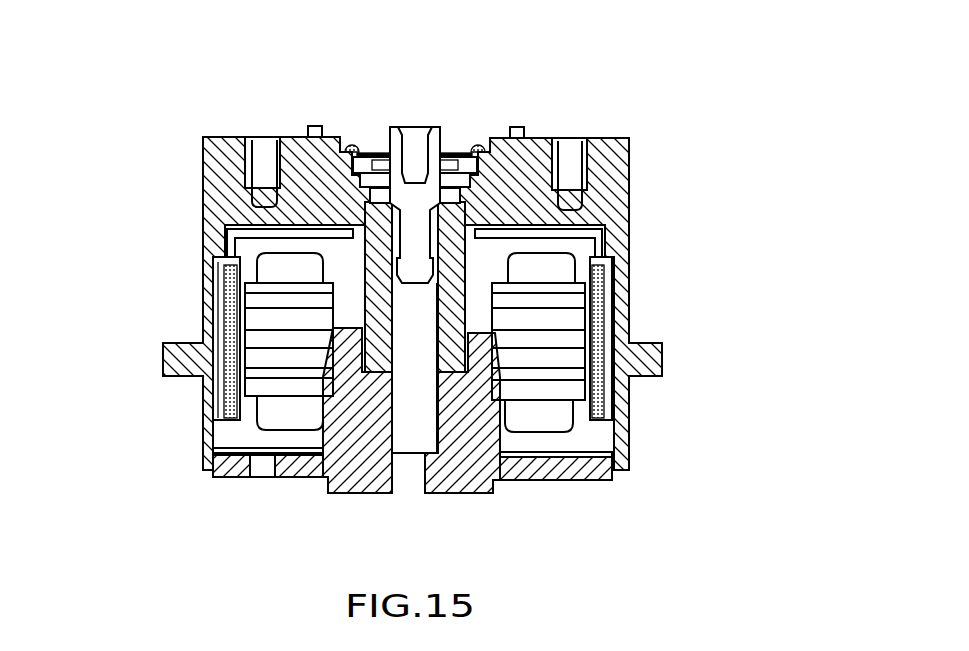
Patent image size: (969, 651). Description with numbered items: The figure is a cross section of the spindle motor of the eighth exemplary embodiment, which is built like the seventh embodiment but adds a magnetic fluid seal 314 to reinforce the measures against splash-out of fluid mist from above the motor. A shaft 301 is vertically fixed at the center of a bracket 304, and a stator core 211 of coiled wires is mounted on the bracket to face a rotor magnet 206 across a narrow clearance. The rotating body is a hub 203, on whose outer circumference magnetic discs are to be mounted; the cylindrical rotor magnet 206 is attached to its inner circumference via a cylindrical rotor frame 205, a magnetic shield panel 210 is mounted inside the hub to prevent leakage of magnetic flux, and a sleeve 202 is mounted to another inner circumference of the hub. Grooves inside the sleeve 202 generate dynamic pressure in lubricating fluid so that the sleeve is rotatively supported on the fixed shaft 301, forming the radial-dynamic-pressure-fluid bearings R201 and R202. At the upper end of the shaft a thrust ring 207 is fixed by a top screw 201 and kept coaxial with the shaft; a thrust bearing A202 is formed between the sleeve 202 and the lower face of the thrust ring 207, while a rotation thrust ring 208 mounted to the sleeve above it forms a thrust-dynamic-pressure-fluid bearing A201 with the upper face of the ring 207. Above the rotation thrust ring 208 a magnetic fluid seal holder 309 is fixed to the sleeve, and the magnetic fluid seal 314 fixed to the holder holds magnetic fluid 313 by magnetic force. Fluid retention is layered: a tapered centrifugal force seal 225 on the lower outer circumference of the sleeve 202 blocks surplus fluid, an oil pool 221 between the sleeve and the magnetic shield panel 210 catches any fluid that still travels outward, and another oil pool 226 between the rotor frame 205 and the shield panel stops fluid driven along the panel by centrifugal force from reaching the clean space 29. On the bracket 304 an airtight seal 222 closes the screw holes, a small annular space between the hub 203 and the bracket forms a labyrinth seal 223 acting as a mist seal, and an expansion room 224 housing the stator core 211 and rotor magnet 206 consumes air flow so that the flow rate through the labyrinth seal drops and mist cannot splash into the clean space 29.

The clean space 29 is at (435, 257).
The thrust ring 207 is at (233, 269).
The rotation thrust ring 208 is at (325, 167).
The thrust-dynamic-pressure-fluid bearing A201 is at (350, 143).
The thrust bearing A202 is at (240, 182).
The magnetic fluid 313 is at (386, 153).
The top screw 201 is at (433, 138).
The magnetic fluid seal 314 is at (458, 148).
The magnetic fluid seal holder 309 is at (487, 143).
The sleeve 202 is at (547, 140).
The oil pool 221 is at (632, 154).
The hub 203 is at (602, 288).
The magnetic shield panel 210 is at (587, 229).
The oil pool 226 is at (612, 253).
The rotor magnet 206 is at (595, 316).
The rotor frame 205 is at (607, 347).
The airtight seal 222 is at (603, 448).
The labyrinth seal 223 is at (615, 467).
The bracket 304 is at (575, 470).
The stator core 211 is at (543, 388).
The shaft 301 is at (397, 440).
The centrifugal force seal 225 is at (357, 378).
The expansion room 224 is at (235, 440).
The radial-dynamic-pressure-fluid bearing R201 is at (240, 231).
The radial-dynamic-pressure-fluid bearing R202 is at (370, 320).